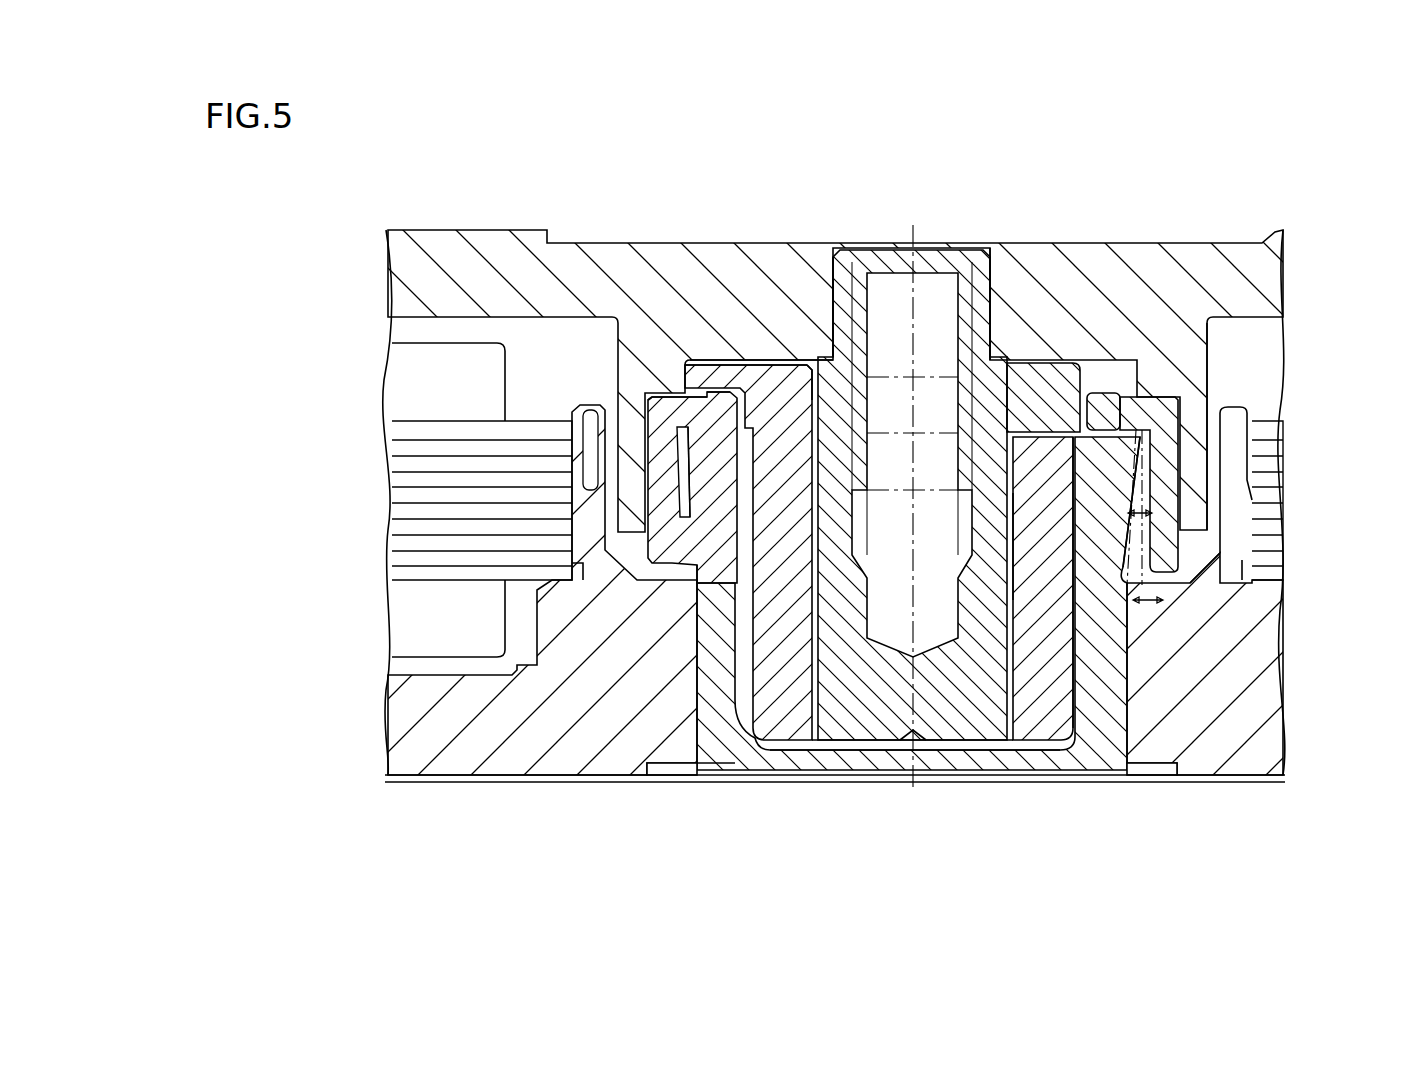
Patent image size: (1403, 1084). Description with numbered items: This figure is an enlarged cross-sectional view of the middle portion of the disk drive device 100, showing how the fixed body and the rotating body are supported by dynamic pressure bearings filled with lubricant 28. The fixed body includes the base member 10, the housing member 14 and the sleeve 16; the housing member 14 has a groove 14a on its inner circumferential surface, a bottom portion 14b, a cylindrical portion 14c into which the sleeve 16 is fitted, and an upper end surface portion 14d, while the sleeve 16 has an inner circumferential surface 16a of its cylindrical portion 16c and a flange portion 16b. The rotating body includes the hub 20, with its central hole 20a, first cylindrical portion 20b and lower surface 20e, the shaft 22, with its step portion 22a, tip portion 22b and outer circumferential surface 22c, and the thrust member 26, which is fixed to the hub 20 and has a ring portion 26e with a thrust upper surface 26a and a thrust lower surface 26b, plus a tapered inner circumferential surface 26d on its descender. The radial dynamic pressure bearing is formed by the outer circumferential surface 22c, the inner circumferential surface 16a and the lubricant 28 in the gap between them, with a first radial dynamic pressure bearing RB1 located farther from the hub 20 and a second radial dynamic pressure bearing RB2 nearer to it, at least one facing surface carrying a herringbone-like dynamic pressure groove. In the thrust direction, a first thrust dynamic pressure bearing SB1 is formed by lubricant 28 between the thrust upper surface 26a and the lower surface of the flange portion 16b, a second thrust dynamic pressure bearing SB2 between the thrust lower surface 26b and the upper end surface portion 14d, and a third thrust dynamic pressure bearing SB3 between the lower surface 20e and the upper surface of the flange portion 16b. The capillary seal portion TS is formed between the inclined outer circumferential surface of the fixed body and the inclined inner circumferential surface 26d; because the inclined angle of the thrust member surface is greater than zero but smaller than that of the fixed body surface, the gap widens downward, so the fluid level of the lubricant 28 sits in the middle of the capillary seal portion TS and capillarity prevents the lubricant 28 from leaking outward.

The base member 10 is at (437, 765).
The housing member 14 is at (700, 620).
The groove 14a is at (1130, 605).
The bottom portion 14b is at (975, 752).
The cylindrical portion 14c is at (1205, 568).
The upper end surface portion 14d is at (1170, 420).
The sleeve 16 is at (785, 690).
The inner circumferential surface of the cylindrical portion 16a is at (850, 720).
The flange portion 16b is at (740, 390).
The cylindrical portion 16c is at (1085, 605).
The hub 20 is at (505, 250).
The central hole 20a is at (995, 300).
The first cylindrical portion 20b is at (1195, 455).
The lower surface 20e is at (760, 365).
The shaft 22 is at (955, 705).
The step portion 22a is at (1040, 395).
The tip portion 22b is at (913, 760).
The outer circumferential surface 22c is at (850, 380).
The thrust member 26 is at (655, 430).
The thrust upper surface 26a is at (705, 420).
The thrust lower surface 26b is at (690, 575).
The inner circumferential surface 26d is at (705, 500).
The ring portion 26e is at (700, 400).
The lubricant 28 is at (1012, 685).
The first thrust dynamic pressure bearing SB1 is at (722, 398).
The second thrust dynamic pressure bearing SB2 is at (715, 755).
The third thrust dynamic pressure bearing SB3 is at (830, 380).
The first radial dynamic pressure bearing RB1 is at (1045, 550).
The second radial dynamic pressure bearing RB2 is at (1100, 395).
The capillary seal portion TS is at (1140, 520).
The disk drive device 100 is at (791, 919).